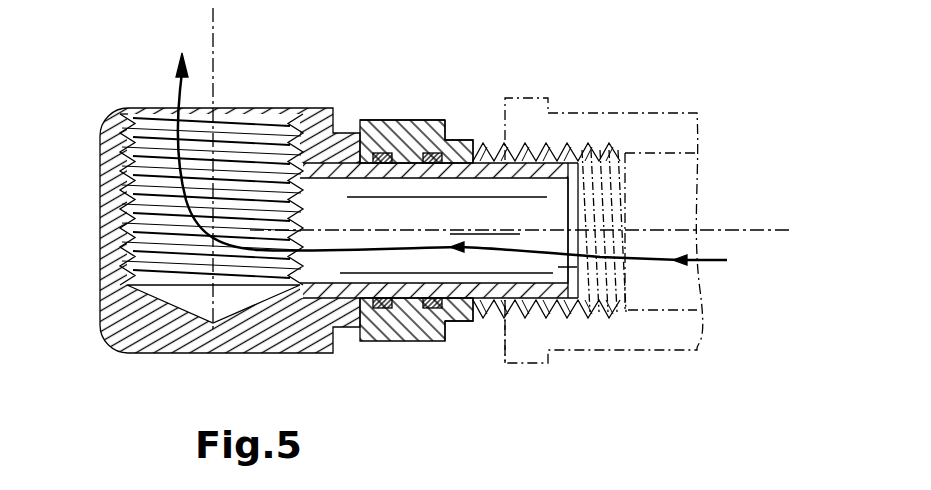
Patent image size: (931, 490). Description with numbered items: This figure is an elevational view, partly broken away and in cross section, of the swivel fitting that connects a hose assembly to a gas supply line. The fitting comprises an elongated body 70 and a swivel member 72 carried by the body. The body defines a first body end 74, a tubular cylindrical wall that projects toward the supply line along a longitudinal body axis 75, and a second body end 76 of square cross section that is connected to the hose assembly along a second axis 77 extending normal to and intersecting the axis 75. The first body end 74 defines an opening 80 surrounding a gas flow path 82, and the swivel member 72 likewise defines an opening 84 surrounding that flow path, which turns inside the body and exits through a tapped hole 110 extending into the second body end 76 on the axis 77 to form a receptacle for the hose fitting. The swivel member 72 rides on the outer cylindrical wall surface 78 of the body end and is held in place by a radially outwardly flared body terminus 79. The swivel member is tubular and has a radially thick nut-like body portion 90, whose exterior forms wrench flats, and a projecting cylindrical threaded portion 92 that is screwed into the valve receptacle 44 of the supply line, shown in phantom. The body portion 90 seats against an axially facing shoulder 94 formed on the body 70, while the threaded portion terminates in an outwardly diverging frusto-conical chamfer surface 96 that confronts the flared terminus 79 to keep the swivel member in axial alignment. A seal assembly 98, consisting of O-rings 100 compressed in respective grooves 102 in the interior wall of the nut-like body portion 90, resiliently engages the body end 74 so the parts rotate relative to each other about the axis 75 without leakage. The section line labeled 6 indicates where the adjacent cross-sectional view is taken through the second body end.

The body 70 is at (97, 274).
The second body end 76 is at (107, 127).
The tapped hole 110 is at (130, 183).
The second axis 77 is at (213, 22).
The swivel member 72 is at (397, 110).
The axially facing shoulder 94 is at (370, 118).
The seal assembly 98 is at (406, 150).
The O-rings 100 is at (420, 163).
The grooves 102 is at (382, 306).
The nut-like body portion 90 is at (430, 306).
The first body end 74 is at (532, 160).
The radially outwardly flared body terminus 79 is at (578, 168).
The projecting cylindrical threaded portion 92 is at (537, 158).
The frusto-conical chamfer surface 96 is at (597, 300).
The opening 84 is at (507, 312).
The outer cylindrical wall surface 78 is at (452, 330).
The opening 80 is at (590, 270).
The longitudinal body axis 75 is at (725, 227).
The valve receptacle 44 is at (505, 365).
The section line 6 is at (588, 93).
The gas flow path 82 is at (690, 263).